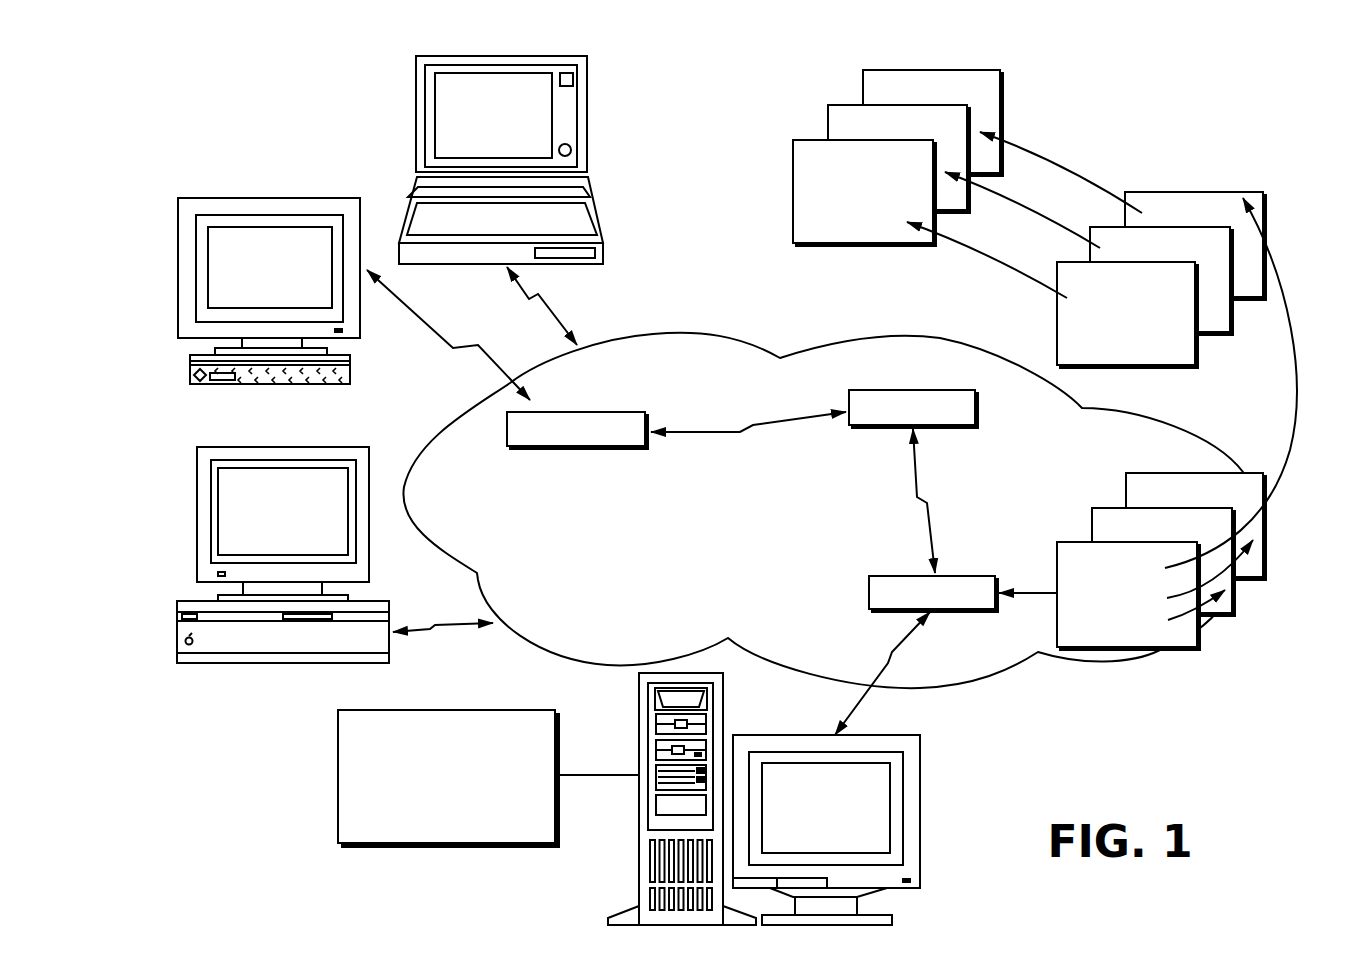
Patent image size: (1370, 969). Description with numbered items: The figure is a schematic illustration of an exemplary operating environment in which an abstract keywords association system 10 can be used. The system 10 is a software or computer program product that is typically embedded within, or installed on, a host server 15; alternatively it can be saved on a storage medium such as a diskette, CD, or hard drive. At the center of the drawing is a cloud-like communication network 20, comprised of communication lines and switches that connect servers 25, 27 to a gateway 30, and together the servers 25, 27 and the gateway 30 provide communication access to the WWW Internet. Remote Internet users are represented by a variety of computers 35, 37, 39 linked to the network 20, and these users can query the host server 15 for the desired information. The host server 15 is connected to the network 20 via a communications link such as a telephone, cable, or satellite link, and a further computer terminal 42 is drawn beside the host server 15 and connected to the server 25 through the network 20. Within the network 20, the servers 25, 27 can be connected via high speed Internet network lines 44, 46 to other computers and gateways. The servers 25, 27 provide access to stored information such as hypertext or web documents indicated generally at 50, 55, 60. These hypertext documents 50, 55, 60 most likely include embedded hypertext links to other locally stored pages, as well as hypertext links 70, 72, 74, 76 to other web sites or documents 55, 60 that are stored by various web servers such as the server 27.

The abstract keywords association system 10 is at (337, 752).
The host server 15 is at (637, 720).
The communication network 20 is at (700, 333).
The server 25 is at (915, 575).
The server 27 is at (928, 390).
The gateway 30 is at (577, 452).
The computer 35 is at (597, 212).
The computer 37 is at (332, 195).
The computer 39 is at (332, 445).
The client computer terminal 42 is at (853, 707).
The high speed Internet network line 44 is at (927, 527).
The high speed Internet network line 46 is at (735, 423).
The hypertext documents 50 is at (1273, 547).
The hypertext documents 55 is at (1277, 218).
The hypertext documents 60 is at (812, 125).
The hypertext link 70 is at (1300, 390).
The hypertext link 72 is at (1077, 175).
The hypertext link 74 is at (1042, 217).
The hypertext link 76 is at (993, 258).